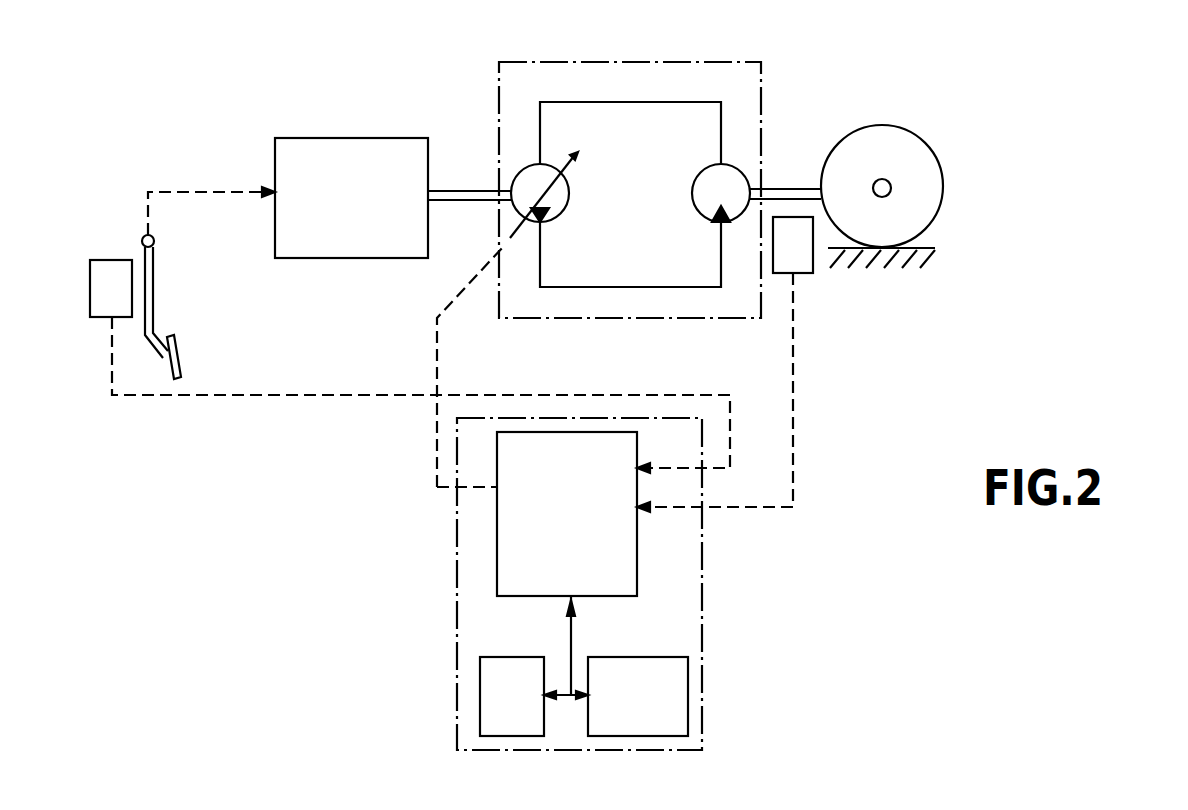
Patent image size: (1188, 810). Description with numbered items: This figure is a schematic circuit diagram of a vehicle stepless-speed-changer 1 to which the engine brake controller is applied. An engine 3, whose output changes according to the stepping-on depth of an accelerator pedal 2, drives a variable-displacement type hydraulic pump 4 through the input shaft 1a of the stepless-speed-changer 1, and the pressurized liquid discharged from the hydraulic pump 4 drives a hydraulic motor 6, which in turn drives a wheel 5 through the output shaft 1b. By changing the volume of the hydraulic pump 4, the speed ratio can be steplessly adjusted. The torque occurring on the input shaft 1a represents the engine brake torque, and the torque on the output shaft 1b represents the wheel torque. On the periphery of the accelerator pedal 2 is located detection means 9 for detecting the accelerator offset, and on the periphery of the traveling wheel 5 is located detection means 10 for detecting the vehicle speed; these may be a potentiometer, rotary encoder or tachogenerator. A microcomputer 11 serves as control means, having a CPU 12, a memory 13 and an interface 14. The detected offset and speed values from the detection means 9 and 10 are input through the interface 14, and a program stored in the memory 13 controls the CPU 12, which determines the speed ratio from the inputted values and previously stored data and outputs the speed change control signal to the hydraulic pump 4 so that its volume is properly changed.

The stepless-speed-changer 1 is at (707, 60).
The input shaft 1a is at (448, 190).
The output shaft 1b is at (820, 188).
The accelerator pedal 2 is at (180, 352).
The engine 3 is at (318, 136).
The variable-displacement type hydraulic pump 4 is at (530, 166).
The wheel 5 is at (912, 128).
The hydraulic motor 6 is at (739, 166).
The detection means 9 is at (90, 287).
The detection means 10 is at (813, 268).
The microcomputer 11 is at (702, 598).
The CPU 12 is at (480, 694).
The memory 13 is at (690, 694).
The interface 14 is at (497, 565).